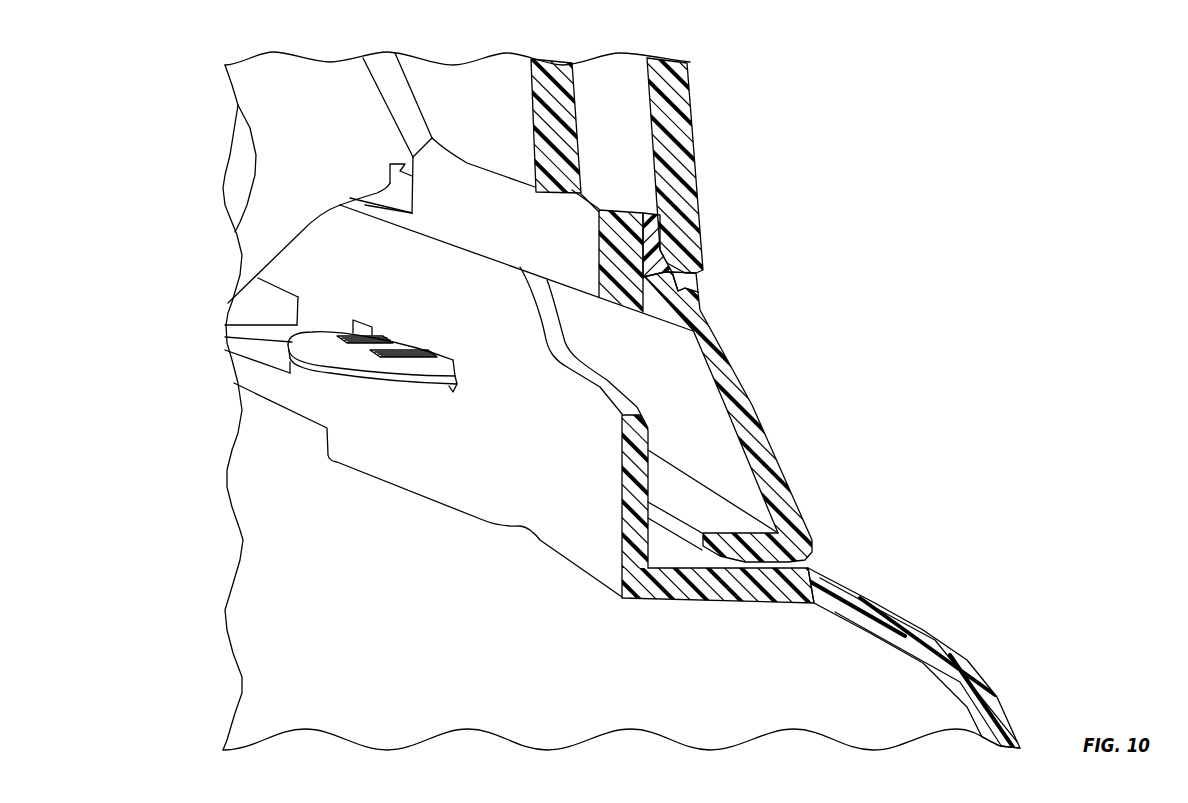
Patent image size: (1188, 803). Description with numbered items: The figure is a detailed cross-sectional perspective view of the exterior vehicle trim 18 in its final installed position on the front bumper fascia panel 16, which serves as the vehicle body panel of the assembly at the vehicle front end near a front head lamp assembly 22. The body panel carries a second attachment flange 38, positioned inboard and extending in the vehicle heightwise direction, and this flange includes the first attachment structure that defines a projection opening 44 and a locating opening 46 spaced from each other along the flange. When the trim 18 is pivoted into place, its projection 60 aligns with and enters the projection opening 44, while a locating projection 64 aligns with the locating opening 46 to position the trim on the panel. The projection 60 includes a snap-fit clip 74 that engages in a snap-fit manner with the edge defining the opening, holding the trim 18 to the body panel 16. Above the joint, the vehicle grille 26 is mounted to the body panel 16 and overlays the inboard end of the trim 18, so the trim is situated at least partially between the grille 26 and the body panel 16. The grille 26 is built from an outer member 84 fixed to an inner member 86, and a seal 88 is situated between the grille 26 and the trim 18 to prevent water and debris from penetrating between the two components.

The front bumper fascia panel 16 is at (942, 646).
The exterior vehicle trim 18 is at (755, 398).
The front head lamp assembly 22 is at (320, 77).
The vehicle grille 26 is at (603, 401).
The second attachment flange 38 is at (482, 490).
The projection opening 44 is at (456, 385).
The locating opening 46 is at (293, 290).
The projection 60 is at (401, 365).
The locating projection 64 is at (250, 335).
The snap-fit clip 74 is at (400, 347).
The outer member 84 is at (668, 62).
The inner member 86 is at (532, 105).
The seal 88 is at (690, 288).